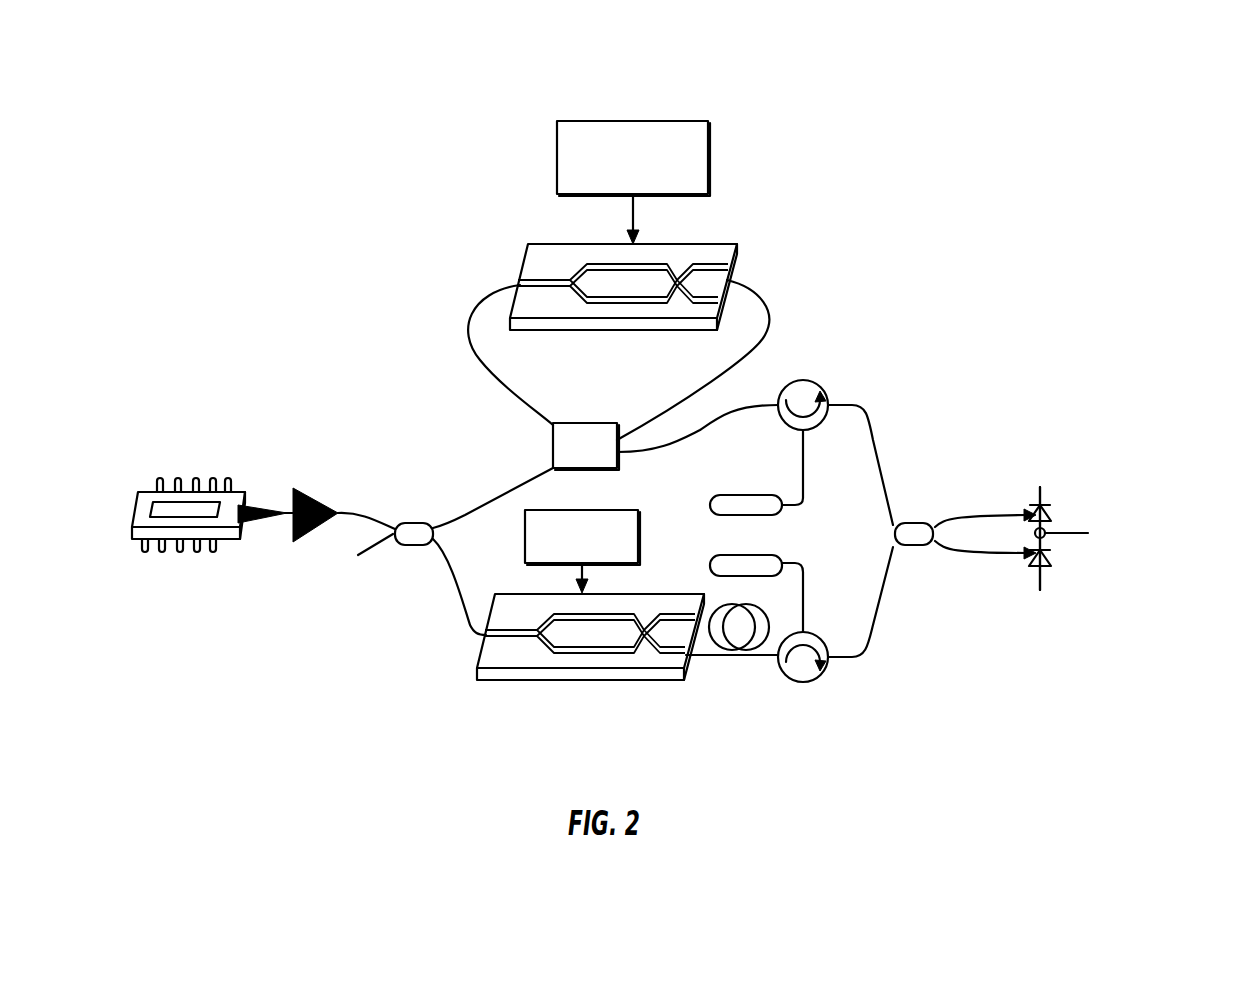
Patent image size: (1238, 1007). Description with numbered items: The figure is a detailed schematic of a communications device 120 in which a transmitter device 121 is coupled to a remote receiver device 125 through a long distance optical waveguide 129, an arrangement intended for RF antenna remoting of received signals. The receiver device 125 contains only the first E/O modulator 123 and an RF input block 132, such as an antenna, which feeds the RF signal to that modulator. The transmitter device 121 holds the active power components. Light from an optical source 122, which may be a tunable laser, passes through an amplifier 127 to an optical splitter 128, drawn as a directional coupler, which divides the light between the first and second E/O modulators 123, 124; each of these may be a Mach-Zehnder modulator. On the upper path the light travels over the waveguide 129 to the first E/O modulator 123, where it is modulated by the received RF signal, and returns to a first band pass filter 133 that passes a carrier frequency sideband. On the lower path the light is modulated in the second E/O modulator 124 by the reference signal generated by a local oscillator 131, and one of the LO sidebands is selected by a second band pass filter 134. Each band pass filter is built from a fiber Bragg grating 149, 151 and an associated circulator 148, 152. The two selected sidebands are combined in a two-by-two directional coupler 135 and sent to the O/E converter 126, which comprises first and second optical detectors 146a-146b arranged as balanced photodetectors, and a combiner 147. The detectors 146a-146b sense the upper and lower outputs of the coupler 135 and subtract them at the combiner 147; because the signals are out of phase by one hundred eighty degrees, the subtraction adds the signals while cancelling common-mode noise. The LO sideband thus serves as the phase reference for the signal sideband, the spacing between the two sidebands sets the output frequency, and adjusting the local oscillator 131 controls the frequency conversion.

The communications device 120 is at (1127, 136).
The transmitter device 121 is at (446, 248).
The optical source 122 is at (128, 533).
The first E/O modulator 123 is at (682, 243).
The second E/O modulator 124 is at (475, 670).
The receiver device 125 is at (489, 142).
The O/E converter 126 is at (1026, 495).
The amplifier 127 is at (290, 537).
The optical splitter 128 is at (358, 555).
The long distance optical waveguide 129 is at (553, 445).
The local oscillator 131 is at (613, 510).
The RF input block 132 is at (645, 121).
The first band pass filter 133 is at (834, 342).
The second band pass filter 134 is at (778, 696).
The directional coupler 135 is at (933, 545).
The first and second optical detectors 146a-146b is at (1040, 507).
The combiner 147 is at (1046, 528).
The circulator 148 is at (826, 390).
The fiber Bragg grating 149 is at (768, 515).
The fiber Bragg grating 151 is at (768, 555).
The circulator 152 is at (825, 678).